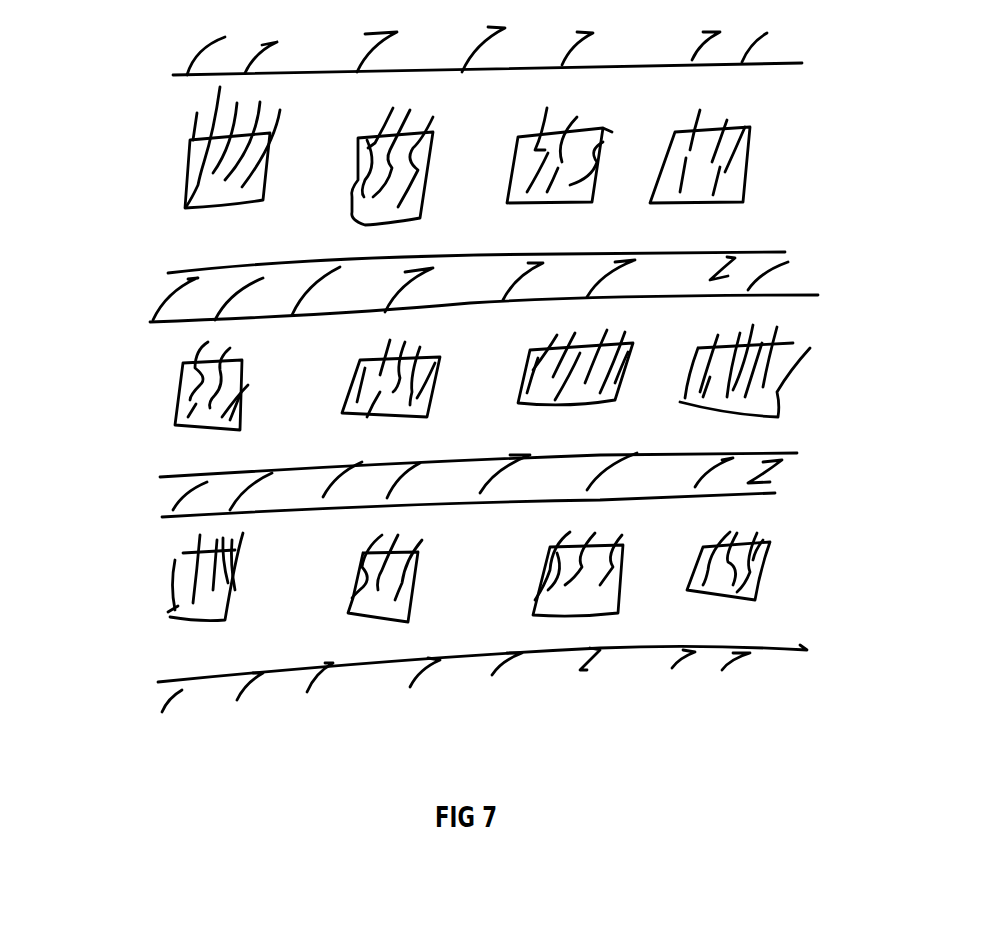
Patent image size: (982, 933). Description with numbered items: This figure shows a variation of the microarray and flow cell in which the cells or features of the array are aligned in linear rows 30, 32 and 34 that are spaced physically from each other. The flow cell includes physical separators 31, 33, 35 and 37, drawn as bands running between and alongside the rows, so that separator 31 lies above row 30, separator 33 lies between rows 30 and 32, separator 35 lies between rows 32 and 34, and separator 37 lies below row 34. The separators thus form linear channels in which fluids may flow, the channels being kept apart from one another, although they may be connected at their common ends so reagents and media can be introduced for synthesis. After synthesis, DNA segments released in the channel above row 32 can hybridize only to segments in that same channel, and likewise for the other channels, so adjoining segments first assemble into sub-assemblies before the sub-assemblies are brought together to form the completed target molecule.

The linear row 30 is at (135, 188).
The physical separator 31 is at (782, 74).
The linear row 32 is at (124, 409).
The physical separator 33 is at (813, 305).
The linear row 34 is at (135, 589).
The physical separator 35 is at (780, 508).
The physical separator 37 is at (783, 645).